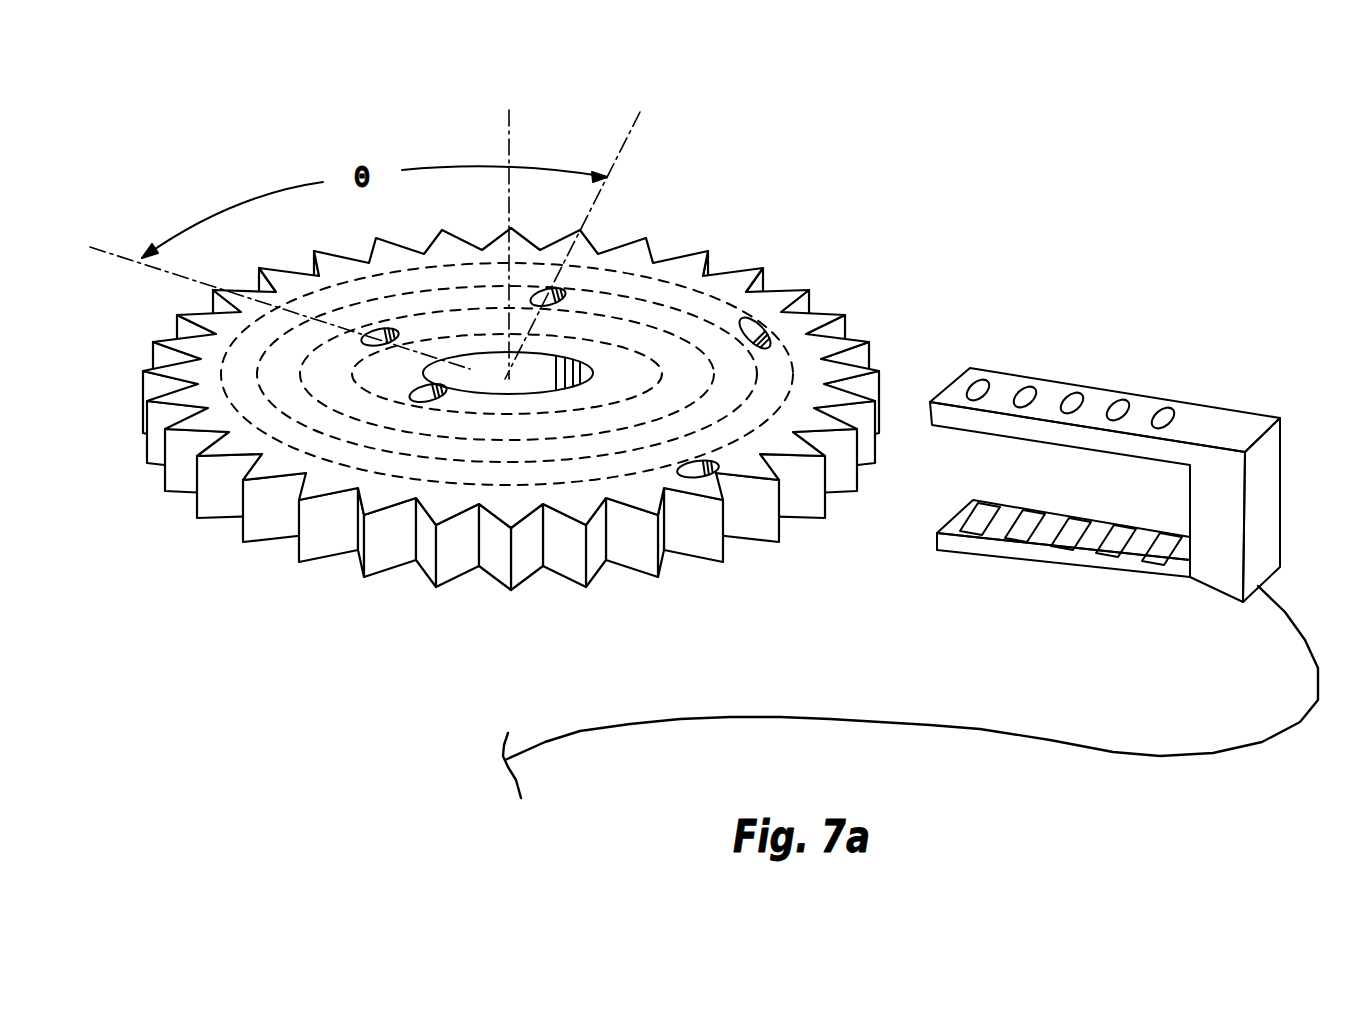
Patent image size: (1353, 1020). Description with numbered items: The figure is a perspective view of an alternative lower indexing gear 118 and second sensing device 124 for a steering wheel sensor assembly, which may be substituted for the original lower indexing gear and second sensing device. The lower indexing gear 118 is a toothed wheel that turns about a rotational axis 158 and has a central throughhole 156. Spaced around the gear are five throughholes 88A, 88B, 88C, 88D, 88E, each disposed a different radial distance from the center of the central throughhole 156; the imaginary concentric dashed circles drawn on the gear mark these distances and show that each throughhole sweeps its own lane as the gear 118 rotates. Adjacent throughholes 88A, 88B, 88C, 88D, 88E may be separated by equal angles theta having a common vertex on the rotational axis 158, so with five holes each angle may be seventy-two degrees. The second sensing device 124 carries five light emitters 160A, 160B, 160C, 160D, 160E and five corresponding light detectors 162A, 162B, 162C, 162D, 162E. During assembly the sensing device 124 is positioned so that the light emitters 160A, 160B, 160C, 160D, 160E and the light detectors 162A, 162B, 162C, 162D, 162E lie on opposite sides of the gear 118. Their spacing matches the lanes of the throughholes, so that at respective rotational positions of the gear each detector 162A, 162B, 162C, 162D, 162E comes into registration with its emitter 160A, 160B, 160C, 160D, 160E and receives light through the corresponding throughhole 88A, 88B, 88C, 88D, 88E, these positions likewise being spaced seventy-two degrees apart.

The lower indexing gear 118 is at (511, 445).
The central throughhole 156 is at (541, 504).
The rotational axis 158 is at (365, 215).
The throughhole 88A is at (432, 521).
The throughhole 88B is at (249, 427).
The throughhole 88C is at (637, 238).
The throughhole 88D is at (786, 291).
The throughhole 88E is at (722, 537).
The second sensing device 124 is at (1136, 471).
The light emitter 160A is at (968, 340).
The light emitter 160B is at (1044, 338).
The light emitter 160C is at (1091, 361).
The light emitter 160D is at (1143, 362).
The light emitter 160E is at (1200, 384).
The light detector 162A is at (926, 556).
The light detector 162B is at (983, 582).
The light detector 162C is at (1050, 574).
The light detector 162D is at (1098, 598).
The light detector 162E is at (1152, 604).